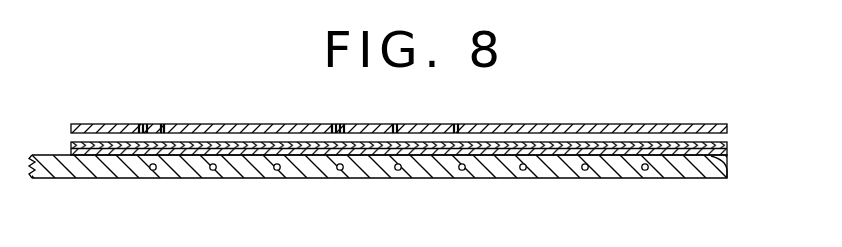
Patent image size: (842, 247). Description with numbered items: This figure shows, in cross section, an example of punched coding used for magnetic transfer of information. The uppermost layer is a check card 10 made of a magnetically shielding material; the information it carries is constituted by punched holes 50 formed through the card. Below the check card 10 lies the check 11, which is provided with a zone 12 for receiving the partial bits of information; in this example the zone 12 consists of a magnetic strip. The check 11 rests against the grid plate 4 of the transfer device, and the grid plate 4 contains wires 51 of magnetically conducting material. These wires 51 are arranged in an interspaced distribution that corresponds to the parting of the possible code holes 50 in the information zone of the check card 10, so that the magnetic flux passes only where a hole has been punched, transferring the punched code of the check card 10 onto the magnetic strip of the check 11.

The grid plate 4 is at (258, 162).
The check card 10 is at (100, 124).
The check 11 is at (70, 144).
The zone 12 is at (727, 179).
The punched holes 50 is at (343, 125).
The wires 51 is at (643, 169).